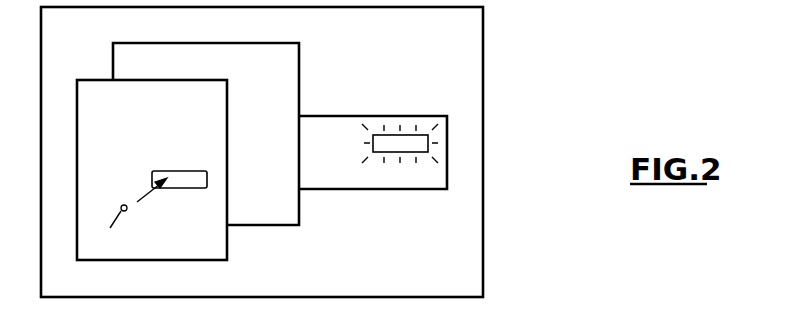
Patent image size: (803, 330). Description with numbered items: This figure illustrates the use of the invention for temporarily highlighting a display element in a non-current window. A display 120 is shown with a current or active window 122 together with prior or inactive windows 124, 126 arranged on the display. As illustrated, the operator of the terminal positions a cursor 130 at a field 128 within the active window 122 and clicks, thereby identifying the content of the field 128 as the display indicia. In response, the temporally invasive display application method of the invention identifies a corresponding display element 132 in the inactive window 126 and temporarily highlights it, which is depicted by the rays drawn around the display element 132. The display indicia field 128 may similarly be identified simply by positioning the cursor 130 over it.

The display 120 is at (483, 45).
The current or active window 122 is at (175, 255).
The prior or inactive window 124 is at (280, 220).
The prior or inactive window 126 is at (340, 183).
The field 128 is at (160, 170).
The cursor 130 is at (130, 215).
The display element 132 is at (429, 144).